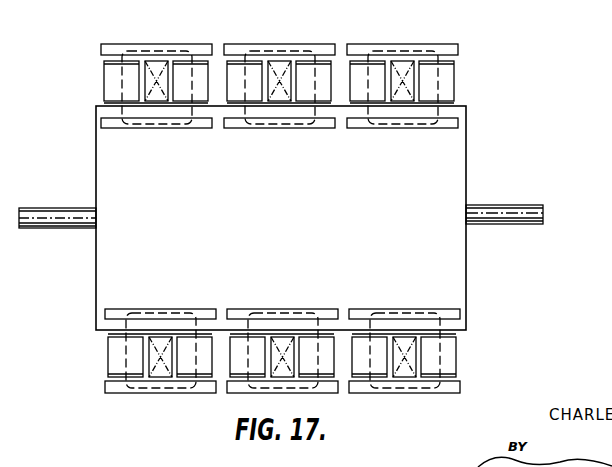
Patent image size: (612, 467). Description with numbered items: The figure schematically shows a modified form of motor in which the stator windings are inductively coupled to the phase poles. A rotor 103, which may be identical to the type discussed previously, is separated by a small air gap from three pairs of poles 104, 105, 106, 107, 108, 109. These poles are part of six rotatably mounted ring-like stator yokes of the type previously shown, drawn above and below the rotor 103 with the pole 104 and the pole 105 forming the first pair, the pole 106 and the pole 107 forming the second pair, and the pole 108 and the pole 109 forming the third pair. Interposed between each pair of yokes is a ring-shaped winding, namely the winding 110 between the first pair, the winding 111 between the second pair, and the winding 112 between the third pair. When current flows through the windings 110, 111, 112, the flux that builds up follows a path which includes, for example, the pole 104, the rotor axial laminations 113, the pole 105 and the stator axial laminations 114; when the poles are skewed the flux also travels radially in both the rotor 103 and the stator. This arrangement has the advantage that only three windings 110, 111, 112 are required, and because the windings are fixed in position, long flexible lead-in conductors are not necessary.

The rotor 103 is at (467, 163).
The pole 104 is at (104, 74).
The pole 105 is at (207, 62).
The pole 106 is at (226, 62).
The pole 107 is at (333, 62).
The pole 108 is at (347, 62).
The pole 109 is at (455, 72).
The ring-shaped winding 110 is at (153, 62).
The ring-shaped winding 111 is at (280, 62).
The ring-shaped winding 112 is at (398, 62).
The rotor axial laminations 113 is at (112, 132).
The stator axial laminations 114 is at (102, 46).